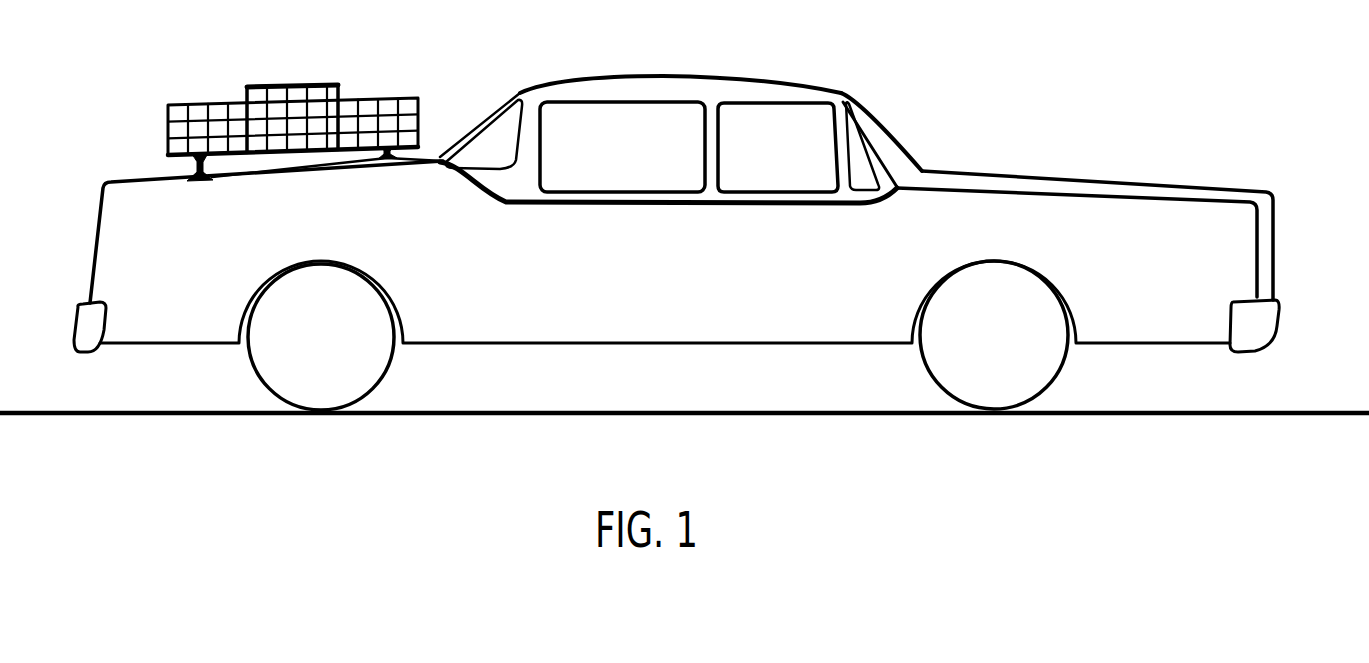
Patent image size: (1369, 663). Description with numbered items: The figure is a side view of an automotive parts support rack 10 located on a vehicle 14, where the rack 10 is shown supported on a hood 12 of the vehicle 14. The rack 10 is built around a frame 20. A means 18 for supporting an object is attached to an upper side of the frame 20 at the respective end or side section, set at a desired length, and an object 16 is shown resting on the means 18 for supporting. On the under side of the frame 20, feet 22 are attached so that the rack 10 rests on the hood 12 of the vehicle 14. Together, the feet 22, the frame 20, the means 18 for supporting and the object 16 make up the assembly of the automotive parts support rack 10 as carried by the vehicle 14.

The automotive parts support rack 10 is at (190, 92).
The hood 12 is at (97, 197).
The vehicle 14 is at (1275, 195).
The object 16 is at (292, 85).
The means for supporting the object 18 is at (420, 101).
The frame 20 is at (168, 156).
The feet 22 is at (187, 171).